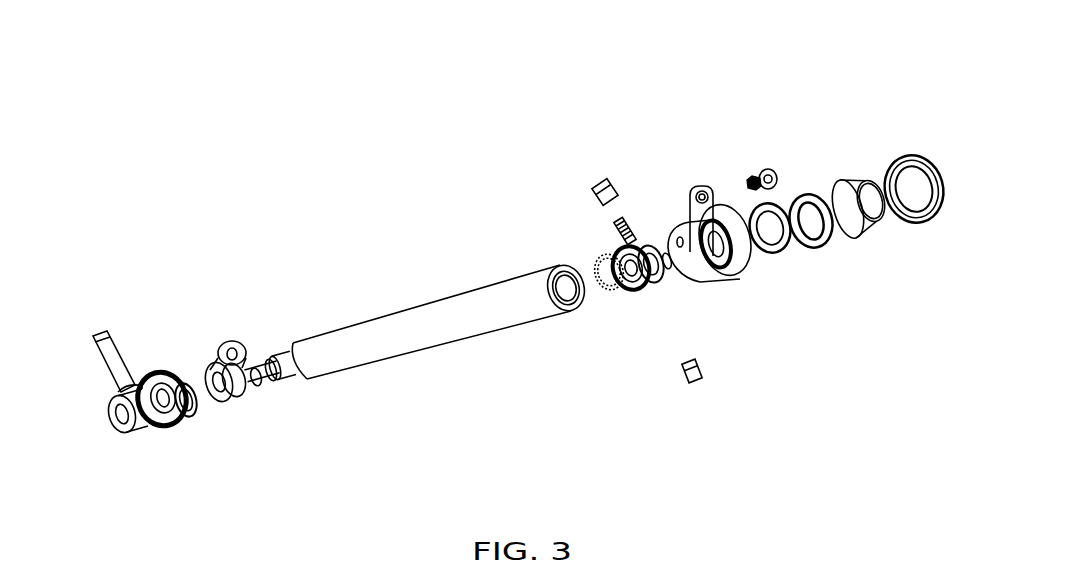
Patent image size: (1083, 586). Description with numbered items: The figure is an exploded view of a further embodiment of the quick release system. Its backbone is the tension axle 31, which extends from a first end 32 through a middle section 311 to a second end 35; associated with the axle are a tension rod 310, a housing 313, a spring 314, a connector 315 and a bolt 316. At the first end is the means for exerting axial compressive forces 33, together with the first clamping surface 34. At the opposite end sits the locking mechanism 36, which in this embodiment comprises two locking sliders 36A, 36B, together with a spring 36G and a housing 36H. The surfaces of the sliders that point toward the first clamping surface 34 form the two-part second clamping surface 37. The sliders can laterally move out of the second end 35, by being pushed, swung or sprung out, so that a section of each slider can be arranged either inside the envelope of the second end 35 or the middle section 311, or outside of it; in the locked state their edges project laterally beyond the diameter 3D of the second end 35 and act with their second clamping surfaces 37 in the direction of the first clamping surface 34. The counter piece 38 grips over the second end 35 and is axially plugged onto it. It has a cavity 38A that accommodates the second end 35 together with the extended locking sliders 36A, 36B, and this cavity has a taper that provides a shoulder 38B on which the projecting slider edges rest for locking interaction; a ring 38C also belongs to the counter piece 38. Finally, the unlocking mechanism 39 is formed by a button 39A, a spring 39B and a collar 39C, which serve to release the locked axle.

The tension axle 31 is at (428, 246).
The middle section 311 is at (463, 308).
The tension rod 310 is at (250, 380).
The housing 313 is at (697, 192).
The spring 314 is at (190, 395).
The connector 315 is at (212, 364).
The bolt 316 is at (778, 182).
The first end 32 is at (264, 316).
The means for exerting axial compressive forces 33 is at (123, 303).
The first clamping surface 34 is at (176, 422).
The second end 35 is at (570, 287).
The locking mechanism 36 is at (583, 322).
The locking slider 36A is at (687, 383).
The locking slider 36B is at (600, 178).
The spring 36G is at (617, 232).
The housing 36H is at (630, 272).
The second clamping surface 37 is at (694, 290).
The counter piece 38 is at (788, 205).
The cavity 38A is at (718, 228).
The shoulder 38B is at (718, 257).
The ring 38C is at (777, 253).
The unlocking mechanism 39 is at (867, 258).
The button 39A is at (875, 218).
The spring 39B is at (824, 243).
The collar 39C is at (900, 160).
The diameter 3D is at (651, 313).